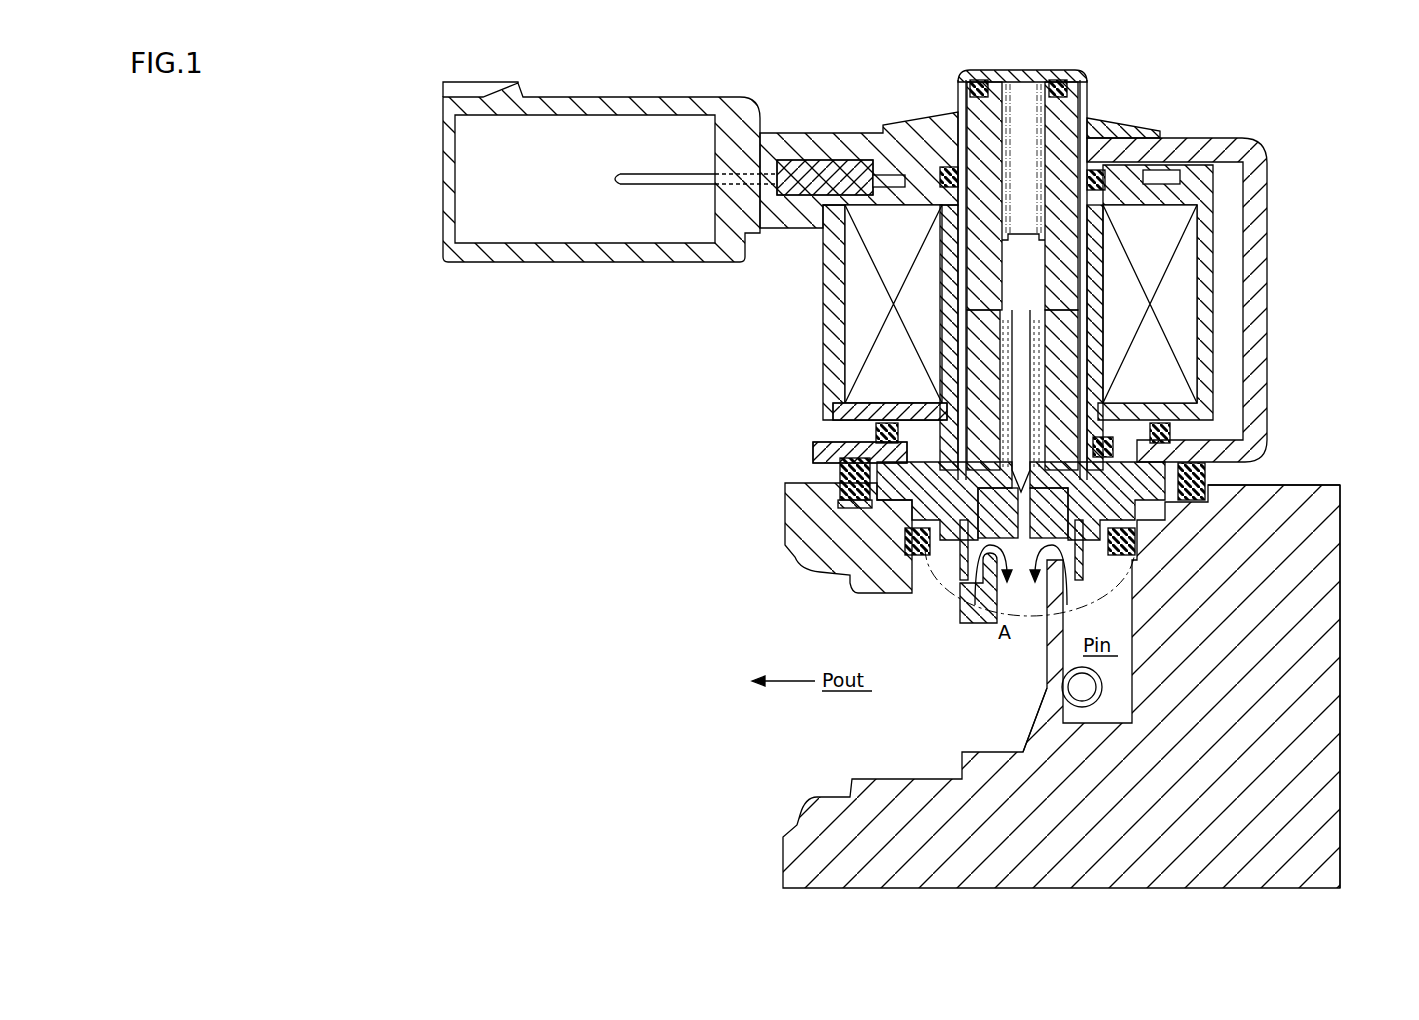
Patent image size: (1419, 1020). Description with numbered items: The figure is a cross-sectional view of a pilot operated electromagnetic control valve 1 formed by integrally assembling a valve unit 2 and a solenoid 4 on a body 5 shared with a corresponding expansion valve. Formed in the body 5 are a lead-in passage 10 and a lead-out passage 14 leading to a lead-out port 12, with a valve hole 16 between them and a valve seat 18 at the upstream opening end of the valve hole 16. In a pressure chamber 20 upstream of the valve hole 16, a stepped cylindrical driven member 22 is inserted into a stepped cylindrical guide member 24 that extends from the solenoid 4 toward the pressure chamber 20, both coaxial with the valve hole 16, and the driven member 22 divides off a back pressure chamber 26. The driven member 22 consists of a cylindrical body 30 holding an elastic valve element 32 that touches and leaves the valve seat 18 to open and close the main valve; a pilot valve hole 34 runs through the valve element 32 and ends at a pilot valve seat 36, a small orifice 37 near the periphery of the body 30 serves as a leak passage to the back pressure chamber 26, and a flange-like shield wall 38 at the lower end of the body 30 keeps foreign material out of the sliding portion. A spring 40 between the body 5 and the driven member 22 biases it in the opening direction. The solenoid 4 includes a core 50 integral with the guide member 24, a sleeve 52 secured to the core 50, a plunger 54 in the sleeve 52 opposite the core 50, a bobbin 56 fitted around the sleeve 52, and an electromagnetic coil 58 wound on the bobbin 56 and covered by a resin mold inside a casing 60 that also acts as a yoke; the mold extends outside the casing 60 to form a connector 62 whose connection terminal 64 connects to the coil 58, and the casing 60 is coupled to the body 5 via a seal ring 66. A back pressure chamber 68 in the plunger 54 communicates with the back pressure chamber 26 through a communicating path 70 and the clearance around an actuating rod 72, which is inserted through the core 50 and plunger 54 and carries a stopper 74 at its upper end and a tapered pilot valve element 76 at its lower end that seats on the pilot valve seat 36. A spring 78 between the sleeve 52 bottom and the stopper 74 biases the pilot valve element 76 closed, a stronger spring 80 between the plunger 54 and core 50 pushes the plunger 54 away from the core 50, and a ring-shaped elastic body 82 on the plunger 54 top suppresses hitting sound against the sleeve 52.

The control valve 1 is at (1293, 115).
The valve unit 2 is at (1298, 441).
The solenoid 4 is at (1285, 236).
The body 5 is at (1342, 574).
The lead-in passage 10 is at (1110, 623).
The lead-out port 12 is at (815, 638).
The lead-out passage 14 is at (957, 678).
The valve hole 16 is at (935, 594).
The valve seat 18 is at (905, 565).
The pressure chamber 20 is at (1135, 556).
The driven member 22 is at (758, 480).
The guide member 24 is at (850, 451).
The back pressure chamber 26 is at (876, 428).
The body 30 is at (838, 476).
The valve element 32 is at (845, 498).
The pilot valve hole 34 is at (1340, 486).
The pilot valve seat 36 is at (1195, 478).
The orifice 37 is at (1085, 528).
The shield wall 38 is at (905, 543).
The spring 40 is at (945, 510).
The core 50 is at (905, 390).
The sleeve 52 is at (958, 113).
The plunger 54 is at (945, 216).
The bobbin 56 is at (940, 268).
The electromagnetic coil 58 is at (860, 315).
The casing 60 is at (1269, 174).
The connector 62 is at (722, 110).
The connection terminal 64 is at (622, 178).
The seal ring 66 is at (850, 488).
The back pressure chamber 68 is at (1078, 84).
The communicating path 70 is at (1100, 171).
The actuating rod 72 is at (1028, 361).
The stopper 74 is at (1045, 281).
The pilot valve element 76 is at (1045, 418).
The spring 78 is at (1088, 128).
The spring 80 is at (1095, 383).
The elastic body 82 is at (978, 88).